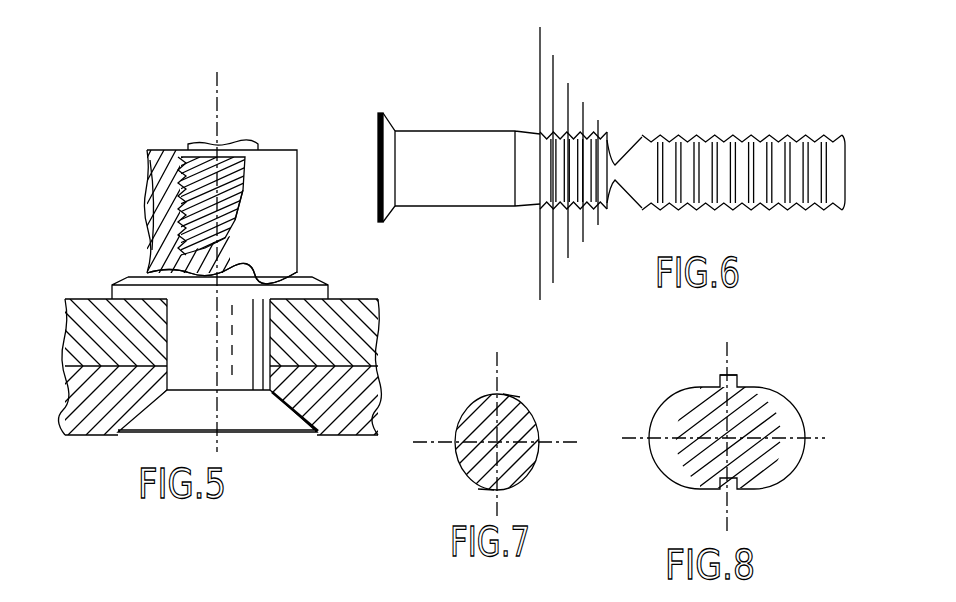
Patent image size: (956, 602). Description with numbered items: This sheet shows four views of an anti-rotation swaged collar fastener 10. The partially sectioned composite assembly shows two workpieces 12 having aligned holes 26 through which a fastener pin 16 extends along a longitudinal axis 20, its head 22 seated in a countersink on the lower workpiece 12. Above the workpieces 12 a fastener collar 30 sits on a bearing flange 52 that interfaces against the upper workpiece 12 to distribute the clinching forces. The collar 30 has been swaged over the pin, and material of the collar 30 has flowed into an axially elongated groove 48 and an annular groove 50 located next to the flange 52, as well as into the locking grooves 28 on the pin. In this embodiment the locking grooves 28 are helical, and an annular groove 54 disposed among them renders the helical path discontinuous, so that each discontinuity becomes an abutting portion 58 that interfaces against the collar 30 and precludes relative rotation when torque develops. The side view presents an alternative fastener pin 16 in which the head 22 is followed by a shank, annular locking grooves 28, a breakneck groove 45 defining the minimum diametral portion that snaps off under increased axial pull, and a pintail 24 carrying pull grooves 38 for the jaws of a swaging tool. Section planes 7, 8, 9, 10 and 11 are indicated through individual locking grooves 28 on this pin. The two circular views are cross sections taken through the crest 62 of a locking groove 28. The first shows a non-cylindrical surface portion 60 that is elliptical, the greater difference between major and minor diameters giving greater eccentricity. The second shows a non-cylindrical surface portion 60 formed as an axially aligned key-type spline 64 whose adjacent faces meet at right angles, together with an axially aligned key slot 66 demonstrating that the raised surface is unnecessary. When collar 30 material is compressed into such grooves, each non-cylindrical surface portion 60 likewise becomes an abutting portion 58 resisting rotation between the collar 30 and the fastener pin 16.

In FIG. 6, the section line 7 is at (598, 120).
In FIG. 6, the section line 8 is at (583, 102).
In FIG. 6, the section line 9 is at (568, 83).
In FIG. 6, the swaged collar fastener 10 is at (553, 55).
In FIG. 6, the section line 11 is at (540, 27).
In FIG. 5, the workpieces 12 is at (372, 321).
In FIG. 5, the fastener pin 16 is at (221, 142).
In FIG. 6, the fastener pin 16 is at (457, 127).
In FIG. 5, the longitudinal axis 20 is at (215, 96).
In FIG. 5, the head 22 is at (198, 418).
In FIG. 6, the head 22 is at (378, 128).
In FIG. 6, the pintail 24 is at (698, 212).
In FIG. 5, the aligned holes 26 is at (258, 336).
In FIG. 5, the locking grooves 28 is at (225, 184).
In FIG. 6, the locking grooves 28 is at (543, 190).
In FIG. 5, the fastener collar 30 is at (298, 206).
In FIG. 6, the pull grooves 38 is at (757, 137).
In FIG. 6, the breakneck groove 45 is at (615, 150).
In FIG. 5, the axially elongated groove 48 is at (152, 212).
In FIG. 5, the annular groove 50 is at (292, 272).
In FIG. 5, the bearing flange 52 is at (330, 294).
In FIG. 5, the annular groove 54 is at (200, 222).
In FIG. 5, the abutting portion 58 is at (225, 212).
In FIG. 7, the non-cylindrical surface portion 60 is at (536, 374).
In FIG. 8, the non-cylindrical surface portion 60 is at (738, 374).
In FIG. 7, the crest 62 is at (542, 411).
In FIG. 8, the crest 62 is at (780, 405).
In FIG. 8, the spline 64 is at (718, 386).
In FIG. 8, the key slot 66 is at (725, 491).